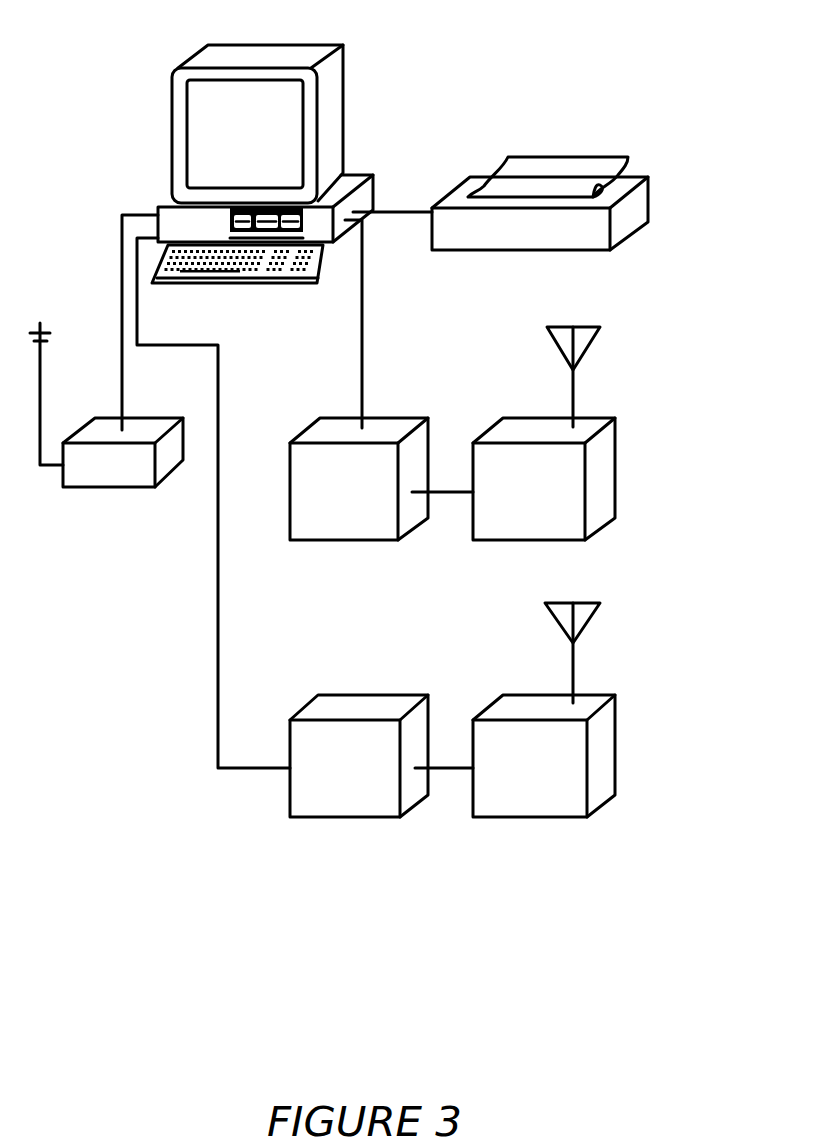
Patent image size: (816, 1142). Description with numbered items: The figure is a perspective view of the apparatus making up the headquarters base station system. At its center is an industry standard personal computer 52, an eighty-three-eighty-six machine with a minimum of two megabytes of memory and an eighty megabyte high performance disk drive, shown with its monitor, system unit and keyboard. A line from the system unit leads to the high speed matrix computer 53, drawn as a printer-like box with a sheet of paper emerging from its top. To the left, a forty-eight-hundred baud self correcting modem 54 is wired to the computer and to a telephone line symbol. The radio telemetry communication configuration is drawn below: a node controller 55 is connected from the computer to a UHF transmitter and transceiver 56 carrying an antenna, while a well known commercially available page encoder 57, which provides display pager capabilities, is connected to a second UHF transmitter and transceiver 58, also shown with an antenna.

The personal computer 52 is at (343, 45).
The high speed matrix computer 53 is at (647, 177).
The self correcting modem 54 is at (138, 420).
The node controller 55 is at (428, 418).
The UHF transmitter and transceiver 56 is at (613, 418).
The page encoder 57 is at (428, 695).
The UHF transmitter and transceiver 58 is at (613, 695).